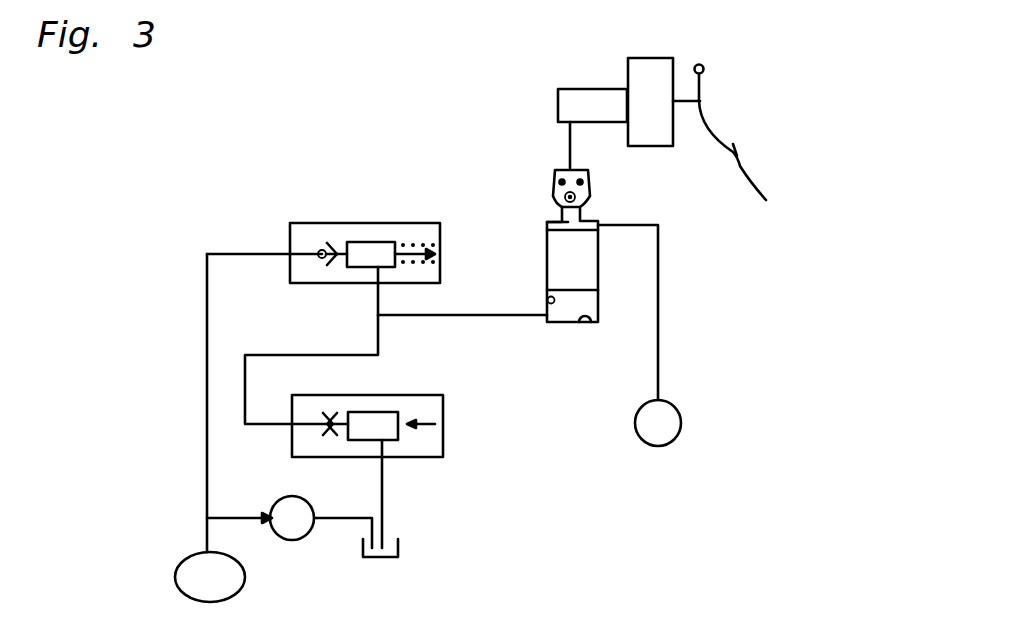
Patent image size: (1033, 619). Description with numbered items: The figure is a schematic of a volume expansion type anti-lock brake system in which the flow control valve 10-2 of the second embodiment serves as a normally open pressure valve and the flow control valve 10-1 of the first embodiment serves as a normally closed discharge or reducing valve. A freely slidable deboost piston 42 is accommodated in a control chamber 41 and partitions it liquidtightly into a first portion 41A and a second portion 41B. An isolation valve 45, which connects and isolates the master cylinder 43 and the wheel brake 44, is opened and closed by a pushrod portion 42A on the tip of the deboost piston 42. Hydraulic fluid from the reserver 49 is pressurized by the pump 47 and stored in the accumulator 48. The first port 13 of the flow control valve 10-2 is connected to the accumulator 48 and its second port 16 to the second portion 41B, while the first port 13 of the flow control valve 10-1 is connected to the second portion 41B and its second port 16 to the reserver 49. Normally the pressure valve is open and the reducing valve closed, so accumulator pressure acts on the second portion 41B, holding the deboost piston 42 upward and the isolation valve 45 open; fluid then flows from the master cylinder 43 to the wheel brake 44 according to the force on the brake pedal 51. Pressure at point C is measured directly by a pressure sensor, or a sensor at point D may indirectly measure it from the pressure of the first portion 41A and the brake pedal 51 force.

The master cylinder 43 is at (578, 89).
The brake pedal 51 is at (766, 200).
The isolation valve 45 is at (590, 196).
The pushrod portion 42A is at (580, 210).
The first portion 41A is at (547, 222).
The control chamber 41 is at (547, 300).
The deboost piston 42 is at (592, 260).
The second portion 41B is at (590, 326).
The point C is at (508, 316).
The point D is at (660, 248).
The wheel brake 44 is at (682, 418).
The flow control valve 10-2 is at (323, 223).
The flow control valve 10-1 is at (412, 458).
The first port 13 is at (289, 256).
The second port 16 is at (381, 284).
The pump 47 is at (300, 540).
The reserver 49 is at (400, 547).
The accumulator 48 is at (183, 558).